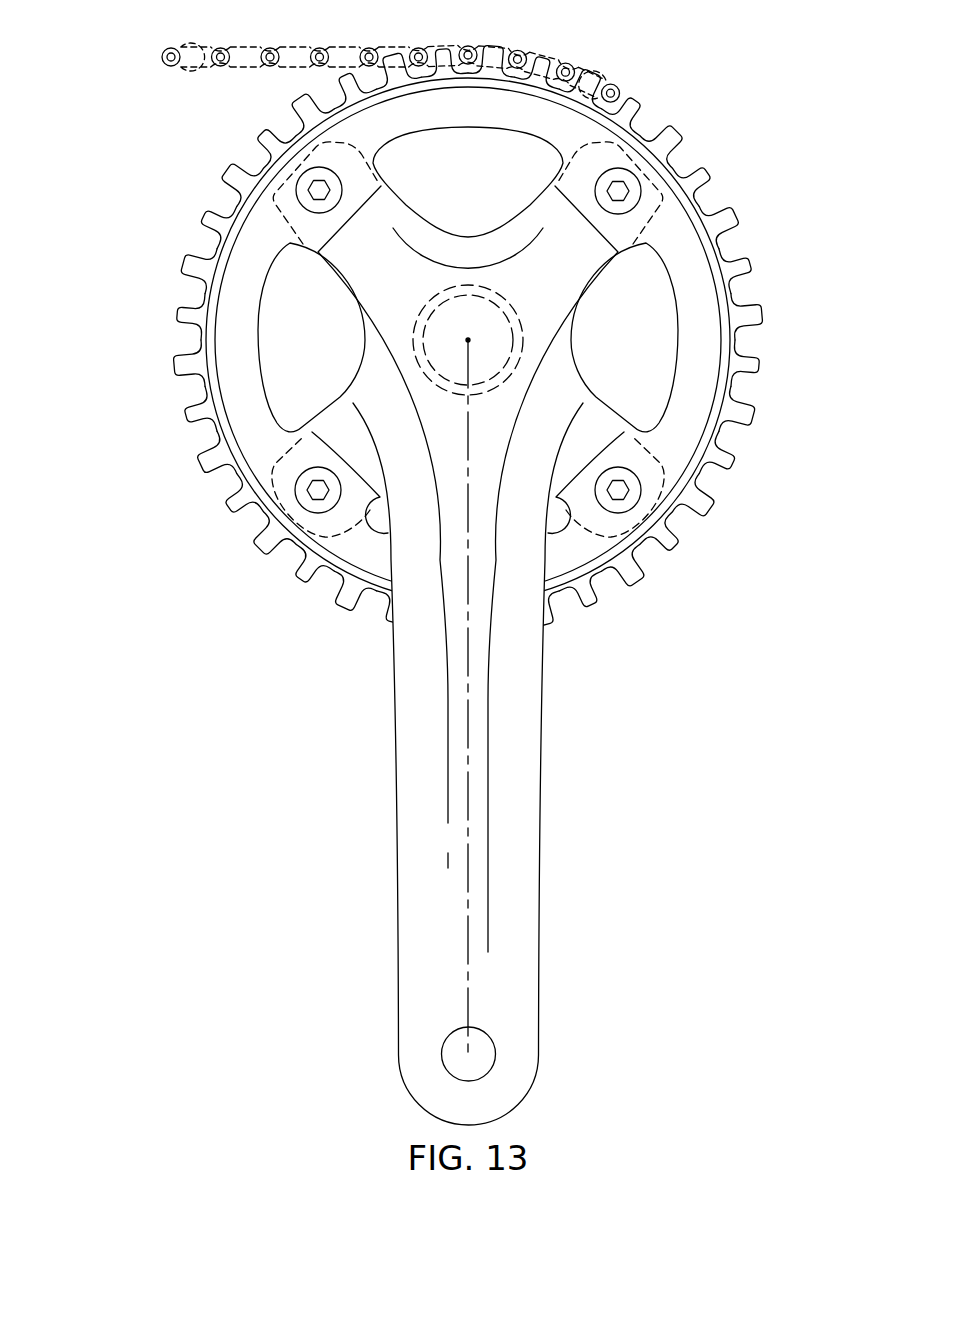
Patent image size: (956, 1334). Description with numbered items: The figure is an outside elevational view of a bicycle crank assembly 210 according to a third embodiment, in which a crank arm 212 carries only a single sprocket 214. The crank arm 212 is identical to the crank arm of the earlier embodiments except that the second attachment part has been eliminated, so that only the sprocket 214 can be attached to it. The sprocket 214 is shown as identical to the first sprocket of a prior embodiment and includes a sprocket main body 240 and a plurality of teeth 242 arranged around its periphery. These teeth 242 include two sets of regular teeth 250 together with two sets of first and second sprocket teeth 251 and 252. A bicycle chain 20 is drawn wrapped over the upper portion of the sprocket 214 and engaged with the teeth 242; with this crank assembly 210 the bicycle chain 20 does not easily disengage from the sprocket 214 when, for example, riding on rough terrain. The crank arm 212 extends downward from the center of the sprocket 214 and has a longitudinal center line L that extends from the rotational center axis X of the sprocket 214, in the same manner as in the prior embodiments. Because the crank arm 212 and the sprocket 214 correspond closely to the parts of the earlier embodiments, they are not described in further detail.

The bicycle chain 20 is at (188, 74).
The bicycle crank assembly 210 is at (464, 565).
The crank arm 212 is at (545, 758).
The sprocket 214 is at (706, 202).
The sprocket main body 240 is at (237, 337).
The teeth 242 is at (464, 330).
The regular teeth 250 is at (300, 92).
The first sprocket teeth 251 is at (262, 133).
The second sprocket teeth 252 is at (228, 172).
The rotational center axis X is at (466, 340).
The longitudinal center line L is at (468, 944).